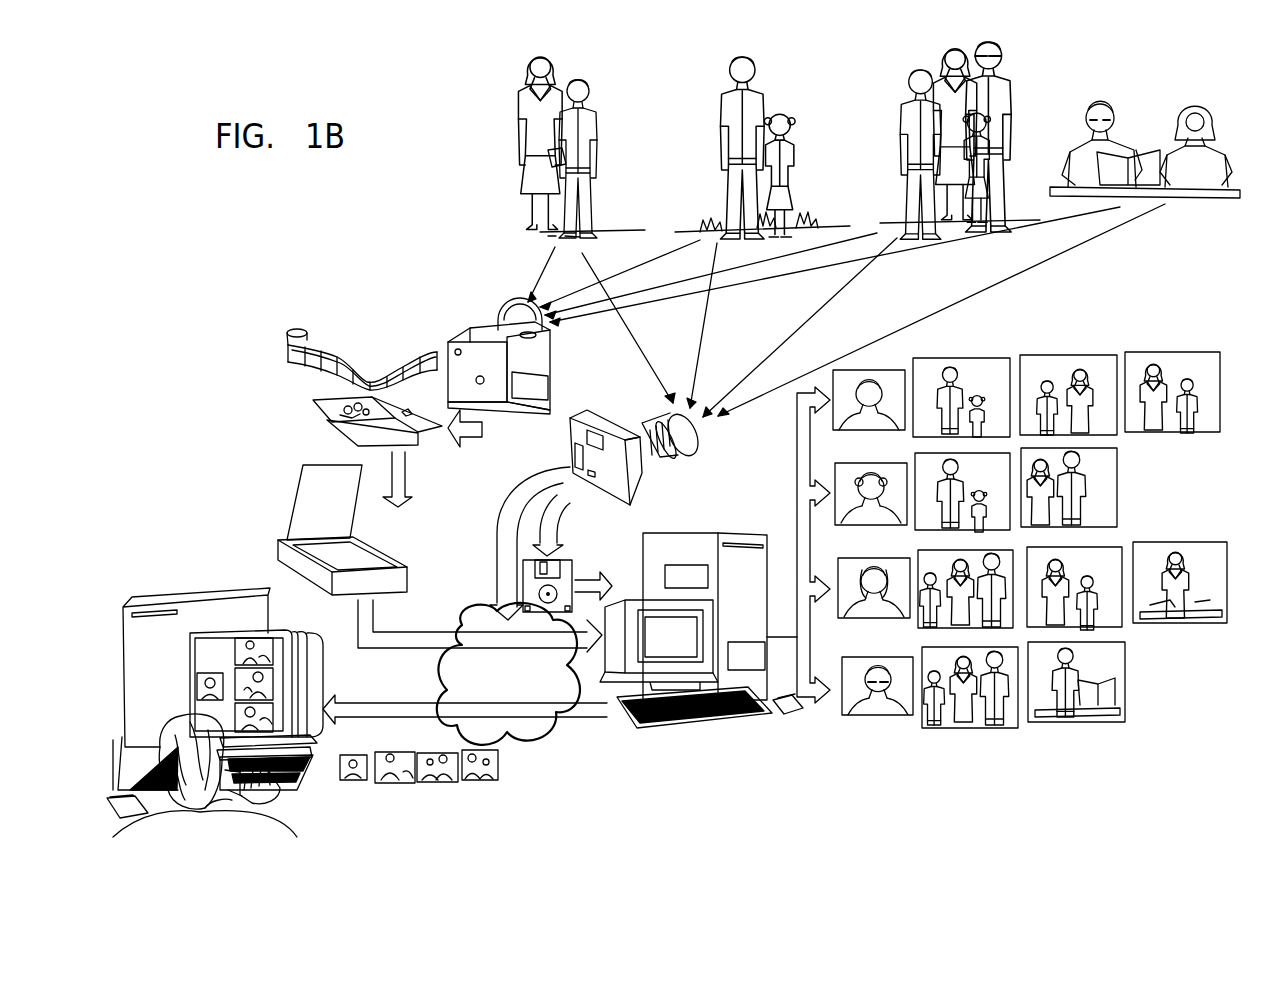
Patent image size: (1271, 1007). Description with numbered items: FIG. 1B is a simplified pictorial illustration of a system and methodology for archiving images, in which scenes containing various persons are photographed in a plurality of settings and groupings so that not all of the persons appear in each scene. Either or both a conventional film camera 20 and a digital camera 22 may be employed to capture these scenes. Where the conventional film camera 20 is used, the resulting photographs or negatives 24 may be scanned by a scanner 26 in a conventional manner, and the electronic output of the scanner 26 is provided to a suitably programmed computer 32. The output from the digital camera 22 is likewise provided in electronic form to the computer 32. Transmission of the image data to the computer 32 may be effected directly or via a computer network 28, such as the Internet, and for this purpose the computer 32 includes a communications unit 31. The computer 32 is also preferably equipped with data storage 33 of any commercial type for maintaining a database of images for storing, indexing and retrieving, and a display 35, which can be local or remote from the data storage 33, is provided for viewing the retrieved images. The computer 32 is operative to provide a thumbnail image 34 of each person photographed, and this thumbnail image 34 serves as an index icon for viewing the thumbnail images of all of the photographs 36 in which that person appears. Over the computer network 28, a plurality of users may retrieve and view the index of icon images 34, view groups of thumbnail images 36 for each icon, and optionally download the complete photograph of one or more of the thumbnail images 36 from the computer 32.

The conventional film camera 20 is at (540, 383).
The digital camera 22 is at (660, 478).
The photographs or negatives 24 is at (328, 420).
The scanner 26 is at (363, 557).
The computer network 28 is at (590, 703).
The communications unit 31 is at (767, 655).
The computer 32 is at (715, 634).
The data storage 33 is at (665, 568).
The thumbnail image 34 is at (848, 380).
The display 35 is at (740, 713).
The photographs 36 is at (1150, 352).